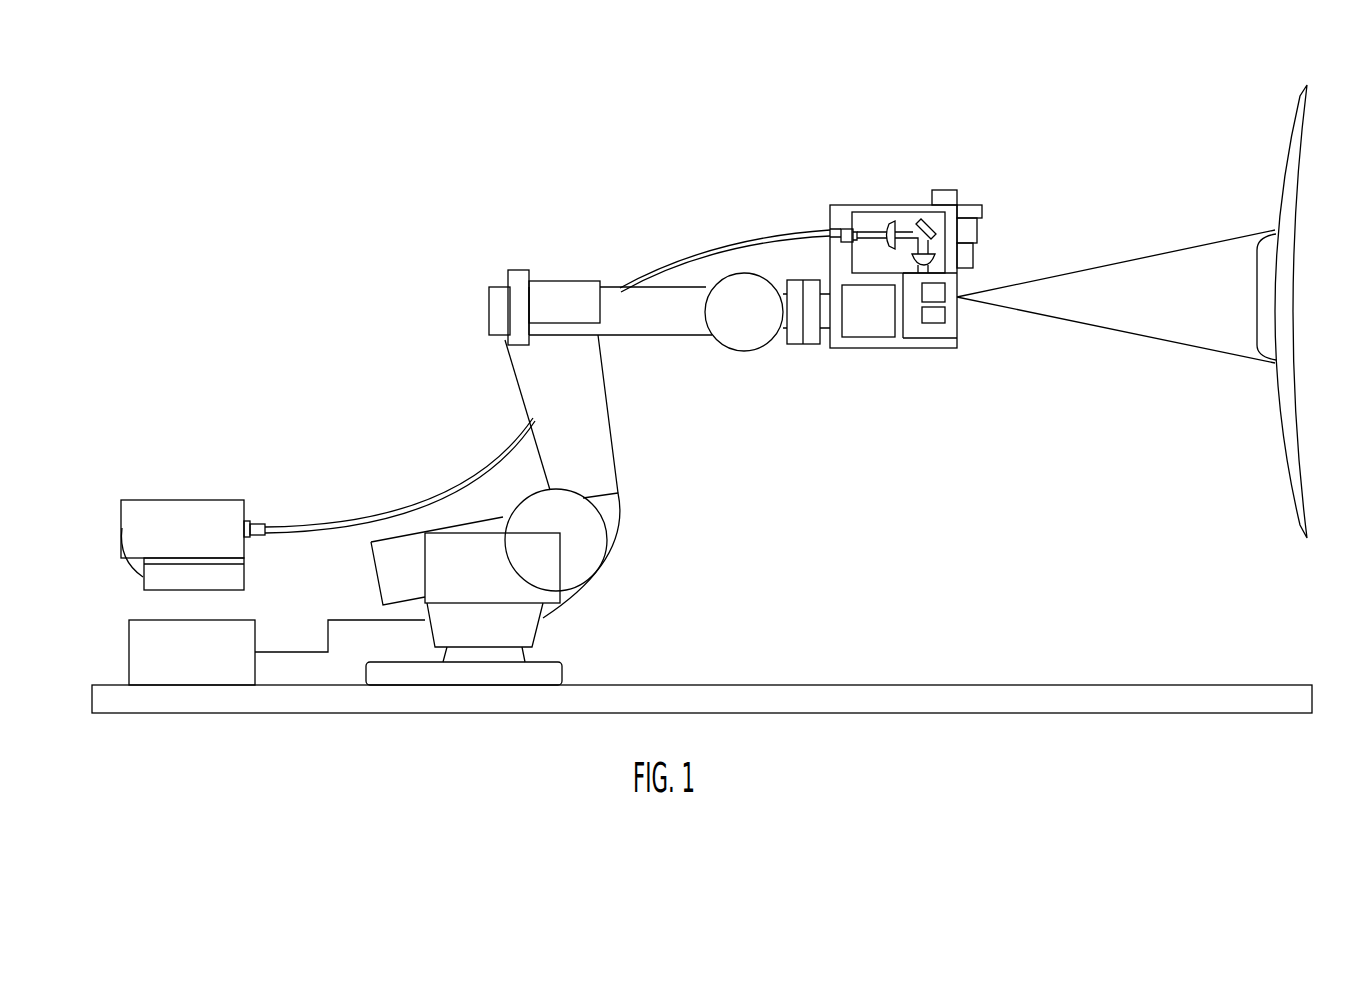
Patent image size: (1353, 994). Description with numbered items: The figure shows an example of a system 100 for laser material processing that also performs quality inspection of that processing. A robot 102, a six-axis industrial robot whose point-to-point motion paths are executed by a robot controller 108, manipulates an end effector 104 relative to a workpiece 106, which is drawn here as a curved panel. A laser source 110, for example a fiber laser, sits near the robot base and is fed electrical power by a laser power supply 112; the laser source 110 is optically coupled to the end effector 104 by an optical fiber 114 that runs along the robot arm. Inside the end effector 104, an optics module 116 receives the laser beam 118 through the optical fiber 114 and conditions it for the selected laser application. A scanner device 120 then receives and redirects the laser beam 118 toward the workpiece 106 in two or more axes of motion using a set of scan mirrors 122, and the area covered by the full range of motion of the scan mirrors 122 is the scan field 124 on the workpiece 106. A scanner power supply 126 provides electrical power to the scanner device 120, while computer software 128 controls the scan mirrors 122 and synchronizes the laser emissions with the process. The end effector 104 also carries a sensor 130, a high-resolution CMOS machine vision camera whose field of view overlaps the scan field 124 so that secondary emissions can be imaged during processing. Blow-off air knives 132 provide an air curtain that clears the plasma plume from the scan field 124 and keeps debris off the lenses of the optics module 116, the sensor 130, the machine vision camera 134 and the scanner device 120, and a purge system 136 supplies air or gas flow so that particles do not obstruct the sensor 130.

The system 100 is at (1018, 124).
The robot 102 is at (614, 443).
The end effector 104 is at (901, 274).
The workpiece 106 is at (1289, 126).
The robot controller 108 is at (244, 620).
The laser source 110 is at (182, 498).
The laser power supply 112 is at (246, 577).
The optical fiber 114 is at (702, 250).
The optics module 116 is at (884, 210).
The laser beam 118 is at (1180, 247).
The scanner device 120 is at (915, 340).
The scan mirrors 122 is at (946, 296).
The scan field 124 is at (1257, 298).
The scanner power supply 126 is at (865, 340).
The computer software 128 is at (938, 325).
The sensor 130 is at (979, 228).
The blow-off air knives 132 is at (972, 205).
The machine vision camera 134 is at (945, 190).
The purge system 136 is at (975, 258).